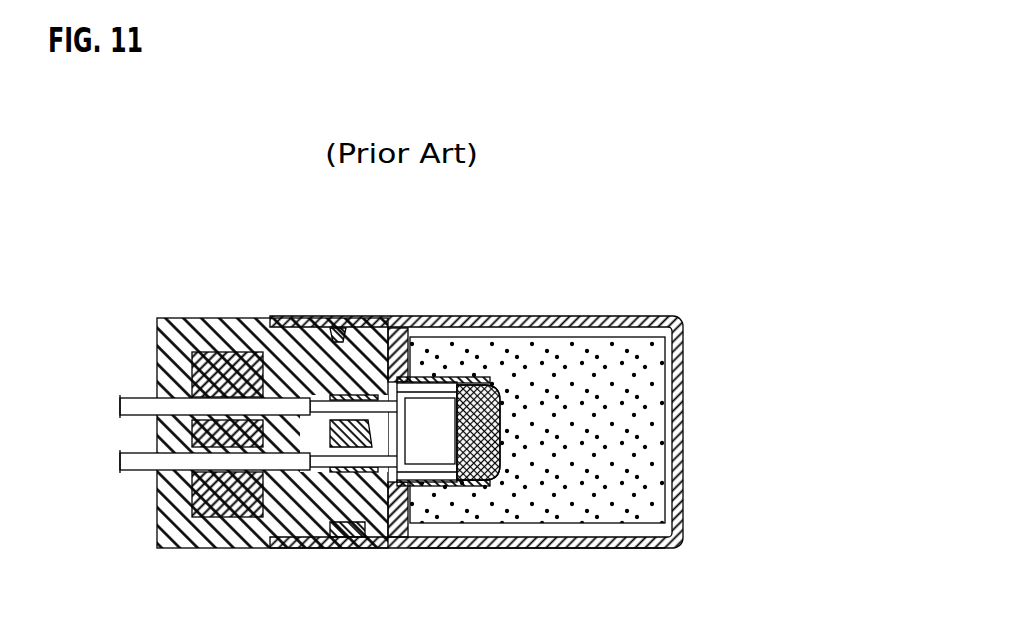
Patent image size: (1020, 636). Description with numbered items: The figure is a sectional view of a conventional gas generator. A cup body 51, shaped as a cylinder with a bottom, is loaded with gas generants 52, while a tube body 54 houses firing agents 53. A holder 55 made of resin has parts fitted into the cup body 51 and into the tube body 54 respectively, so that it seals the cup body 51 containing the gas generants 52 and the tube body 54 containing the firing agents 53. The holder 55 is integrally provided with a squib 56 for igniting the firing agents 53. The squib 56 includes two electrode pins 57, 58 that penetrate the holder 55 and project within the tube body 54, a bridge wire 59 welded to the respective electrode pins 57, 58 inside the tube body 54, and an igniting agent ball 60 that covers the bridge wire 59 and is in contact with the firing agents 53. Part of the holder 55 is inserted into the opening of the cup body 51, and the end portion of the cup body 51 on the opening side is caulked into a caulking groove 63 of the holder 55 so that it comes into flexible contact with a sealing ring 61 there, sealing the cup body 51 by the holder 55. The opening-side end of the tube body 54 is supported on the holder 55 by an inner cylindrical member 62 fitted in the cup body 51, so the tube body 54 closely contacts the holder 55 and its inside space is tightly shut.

The cup body 51 is at (684, 407).
The gas generants 52 is at (633, 382).
The firing agents 53 is at (475, 395).
The tube body 54 is at (507, 403).
The holder 55 is at (220, 320).
The squib 56 is at (420, 483).
The electrode pin 57 is at (150, 400).
The electrode pin 58 is at (150, 467).
The bridge wire 59 is at (443, 483).
The igniting agent ball 60 is at (423, 385).
The sealing ring 61 is at (340, 337).
The inner cylindrical member 62 is at (555, 546).
The caulking groove 63 is at (320, 340).